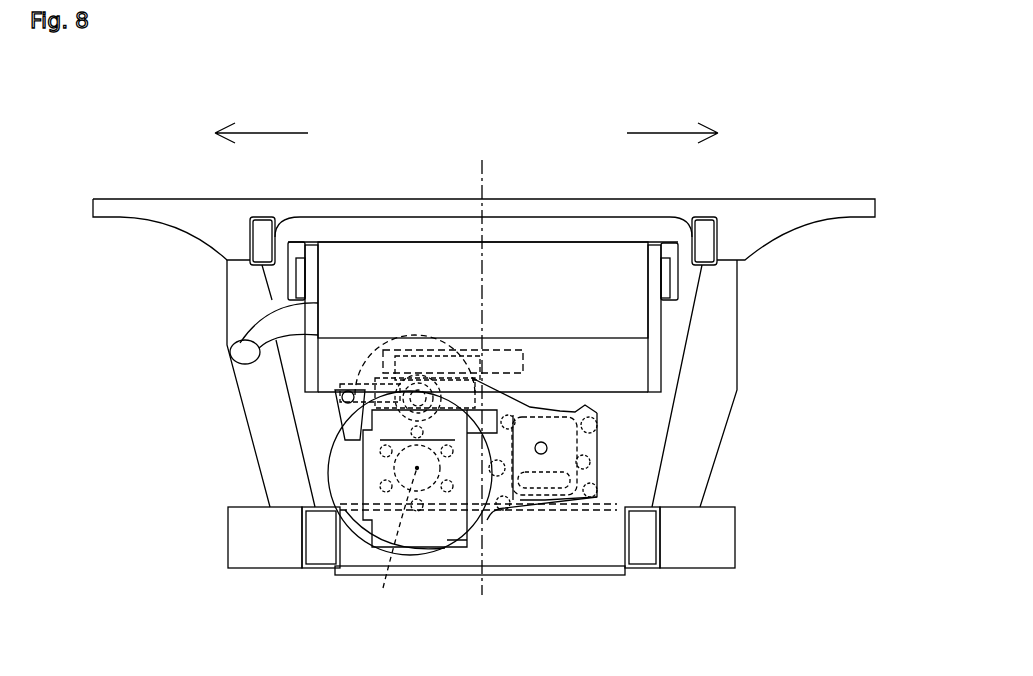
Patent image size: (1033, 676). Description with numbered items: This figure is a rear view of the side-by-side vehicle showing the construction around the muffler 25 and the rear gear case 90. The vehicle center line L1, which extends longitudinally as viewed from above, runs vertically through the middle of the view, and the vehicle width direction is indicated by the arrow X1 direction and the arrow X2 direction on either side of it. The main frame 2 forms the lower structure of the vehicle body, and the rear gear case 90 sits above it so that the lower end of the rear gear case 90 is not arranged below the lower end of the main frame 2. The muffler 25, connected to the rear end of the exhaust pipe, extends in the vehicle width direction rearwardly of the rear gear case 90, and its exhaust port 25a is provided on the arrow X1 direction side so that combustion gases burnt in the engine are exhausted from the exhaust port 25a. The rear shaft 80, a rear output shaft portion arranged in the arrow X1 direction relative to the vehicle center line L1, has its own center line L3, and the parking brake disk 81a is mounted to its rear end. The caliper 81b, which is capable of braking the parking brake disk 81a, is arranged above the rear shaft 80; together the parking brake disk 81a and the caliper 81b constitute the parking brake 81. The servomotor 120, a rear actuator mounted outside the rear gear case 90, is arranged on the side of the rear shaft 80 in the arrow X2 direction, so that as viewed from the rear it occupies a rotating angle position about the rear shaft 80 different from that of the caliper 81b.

The main frame 2 is at (717, 518).
The muffler 25 is at (607, 260).
The exhaust port 25a is at (245, 365).
The rear shaft 80 is at (432, 505).
The parking brake 81 is at (430, 350).
The parking brake disk 81a is at (345, 475).
The caliper 81b is at (398, 380).
The rear gear case 90 is at (500, 520).
The servomotor 120 is at (545, 410).
The vehicle center line L1 is at (480, 555).
The center line of the rear shaft L3 is at (393, 539).
The arrow X1 direction X1 is at (261, 127).
The arrow X2 direction X2 is at (672, 127).